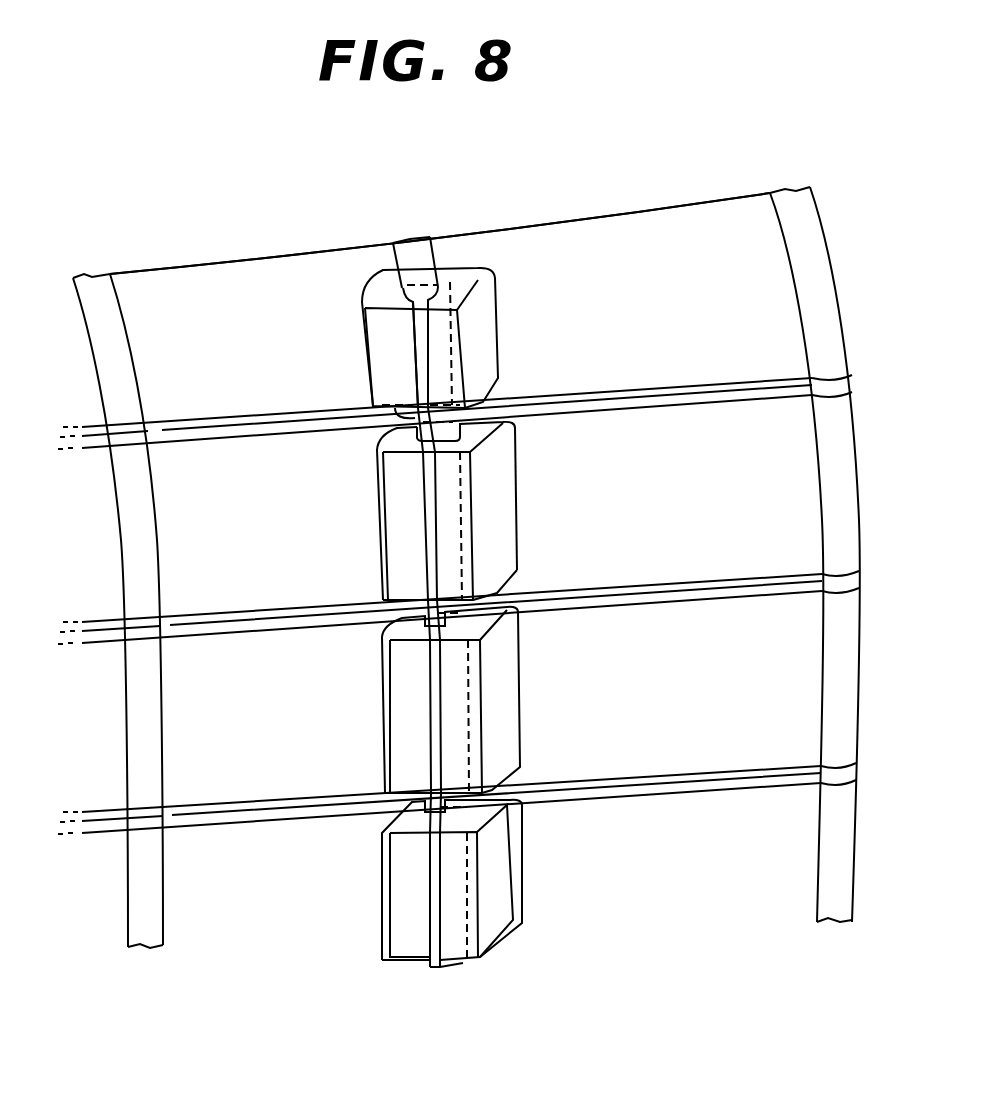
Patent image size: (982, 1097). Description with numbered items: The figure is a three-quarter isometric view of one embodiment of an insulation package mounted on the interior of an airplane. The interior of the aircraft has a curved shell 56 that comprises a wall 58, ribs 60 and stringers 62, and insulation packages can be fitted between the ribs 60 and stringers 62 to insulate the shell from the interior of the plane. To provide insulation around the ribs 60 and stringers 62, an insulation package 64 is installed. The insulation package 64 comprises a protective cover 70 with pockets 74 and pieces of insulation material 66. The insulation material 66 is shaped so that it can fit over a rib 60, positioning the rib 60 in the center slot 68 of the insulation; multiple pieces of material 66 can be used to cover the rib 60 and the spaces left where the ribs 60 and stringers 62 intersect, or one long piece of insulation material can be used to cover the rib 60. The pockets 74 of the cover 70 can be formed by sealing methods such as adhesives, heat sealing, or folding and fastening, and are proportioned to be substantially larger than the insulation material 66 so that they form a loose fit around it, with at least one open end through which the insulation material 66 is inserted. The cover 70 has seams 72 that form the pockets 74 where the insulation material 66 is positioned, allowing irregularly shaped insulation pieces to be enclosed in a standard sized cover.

The curved shell 56 is at (572, 218).
The wall 58 is at (685, 227).
The rib 60 is at (97, 292).
The stringer 62 is at (276, 412).
The insulation package 64 is at (491, 341).
The insulation material 66 is at (432, 277).
The center slot 68 is at (413, 350).
The protective cover 70 is at (482, 516).
The seam 72 is at (513, 620).
The pocket 74 is at (505, 413).